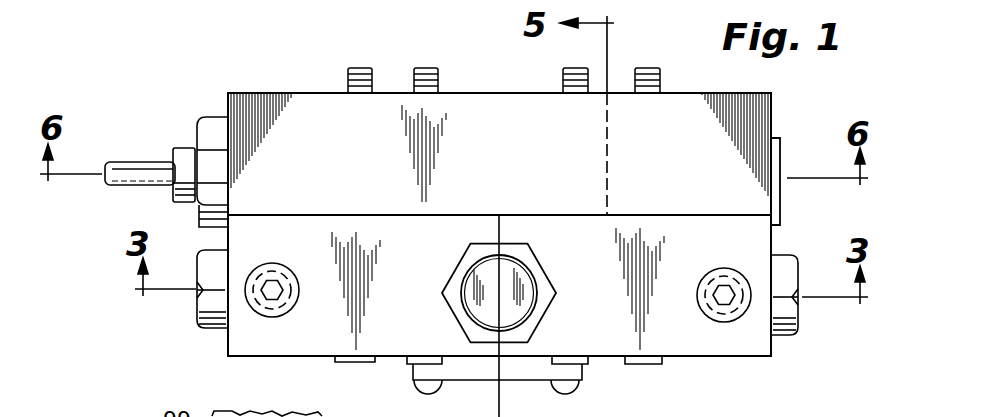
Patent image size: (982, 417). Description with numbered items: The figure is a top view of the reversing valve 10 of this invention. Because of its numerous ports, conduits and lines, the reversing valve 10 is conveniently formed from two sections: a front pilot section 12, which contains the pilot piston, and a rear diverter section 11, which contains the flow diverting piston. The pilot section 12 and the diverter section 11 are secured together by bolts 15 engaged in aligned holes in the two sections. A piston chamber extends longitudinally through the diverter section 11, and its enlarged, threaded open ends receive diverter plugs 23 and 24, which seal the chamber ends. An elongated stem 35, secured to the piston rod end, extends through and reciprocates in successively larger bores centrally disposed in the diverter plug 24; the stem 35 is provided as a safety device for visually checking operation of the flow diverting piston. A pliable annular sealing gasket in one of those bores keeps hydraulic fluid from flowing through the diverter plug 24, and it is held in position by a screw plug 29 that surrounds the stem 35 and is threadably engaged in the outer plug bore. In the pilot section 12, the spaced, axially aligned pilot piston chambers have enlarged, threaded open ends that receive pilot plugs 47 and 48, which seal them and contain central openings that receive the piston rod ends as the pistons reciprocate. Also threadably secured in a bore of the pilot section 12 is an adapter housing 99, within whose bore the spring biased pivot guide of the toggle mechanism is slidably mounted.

The reversing valve 10 is at (735, 88).
The diverter section 11 is at (773, 119).
The pilot section 12 is at (693, 346).
The bolts 15 is at (416, 68).
The diverter plug 23 is at (781, 200).
The diverter plug 24 is at (211, 116).
The screw plug 29 is at (178, 148).
The stem 35 is at (130, 162).
The pilot plug 47 is at (798, 324).
The pilot plug 48 is at (198, 313).
The adapter housing 99 is at (555, 310).